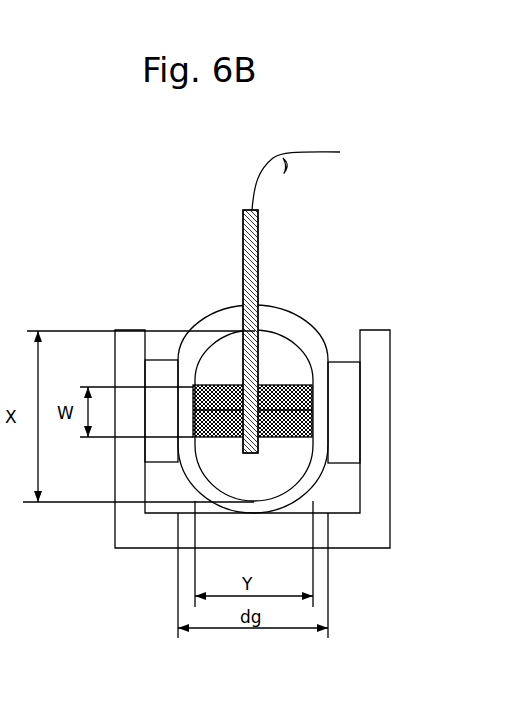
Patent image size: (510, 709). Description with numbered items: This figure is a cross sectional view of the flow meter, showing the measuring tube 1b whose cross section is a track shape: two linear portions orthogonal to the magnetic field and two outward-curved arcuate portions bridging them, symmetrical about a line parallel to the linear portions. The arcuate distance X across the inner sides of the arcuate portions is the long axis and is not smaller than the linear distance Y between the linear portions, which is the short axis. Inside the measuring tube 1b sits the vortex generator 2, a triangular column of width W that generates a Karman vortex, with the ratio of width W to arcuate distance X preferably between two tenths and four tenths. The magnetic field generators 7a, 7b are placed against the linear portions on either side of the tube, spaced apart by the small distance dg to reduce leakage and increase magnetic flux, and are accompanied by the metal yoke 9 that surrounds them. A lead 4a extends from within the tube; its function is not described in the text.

The measuring tube 1b is at (297, 322).
The vortex generator 2 is at (197, 326).
The lead wire 4a is at (250, 262).
The magnetic field generator 7a is at (156, 364).
The magnetic field generator 7b is at (348, 381).
The metal yoke 9 is at (382, 546).